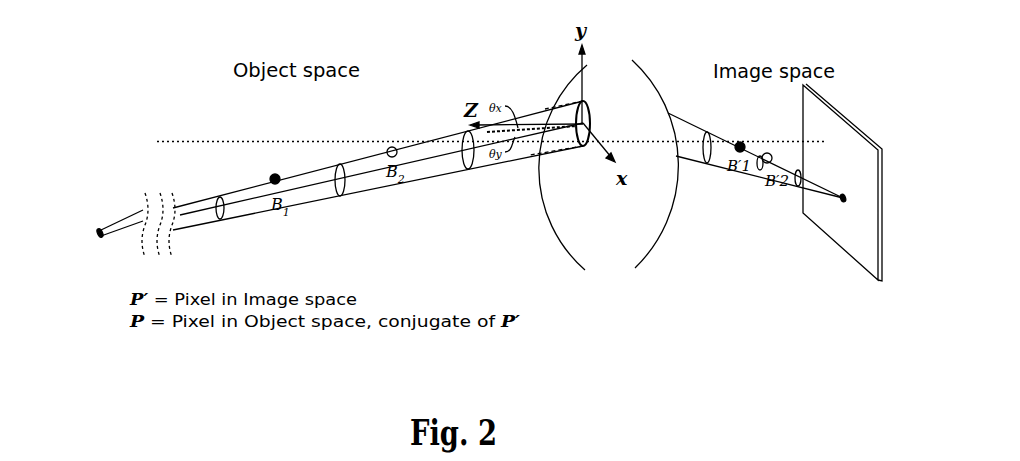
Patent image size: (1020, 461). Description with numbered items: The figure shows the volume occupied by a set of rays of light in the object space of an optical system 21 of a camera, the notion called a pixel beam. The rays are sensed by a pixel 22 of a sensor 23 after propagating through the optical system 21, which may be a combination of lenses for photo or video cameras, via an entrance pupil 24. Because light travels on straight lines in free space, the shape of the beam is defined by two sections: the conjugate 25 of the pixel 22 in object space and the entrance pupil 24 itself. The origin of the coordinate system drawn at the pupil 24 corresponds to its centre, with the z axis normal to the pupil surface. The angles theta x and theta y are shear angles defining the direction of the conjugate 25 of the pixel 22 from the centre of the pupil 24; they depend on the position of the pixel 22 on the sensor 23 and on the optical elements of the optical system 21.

The optical system 21 is at (567, 193).
The pixel 22 is at (841, 199).
The sensor 23 is at (862, 252).
The entrance pupil 24 is at (593, 119).
The conjugate of the pixel 25 is at (97, 235).